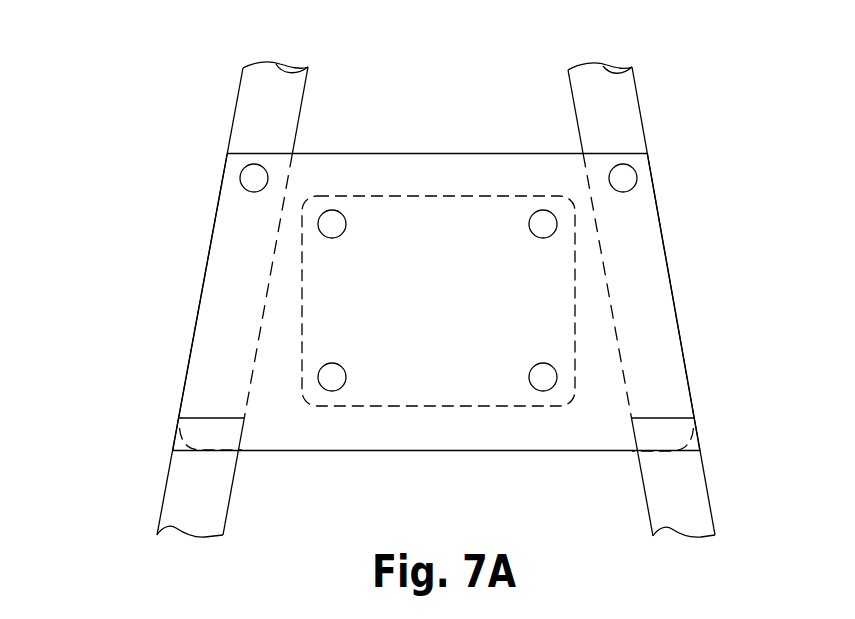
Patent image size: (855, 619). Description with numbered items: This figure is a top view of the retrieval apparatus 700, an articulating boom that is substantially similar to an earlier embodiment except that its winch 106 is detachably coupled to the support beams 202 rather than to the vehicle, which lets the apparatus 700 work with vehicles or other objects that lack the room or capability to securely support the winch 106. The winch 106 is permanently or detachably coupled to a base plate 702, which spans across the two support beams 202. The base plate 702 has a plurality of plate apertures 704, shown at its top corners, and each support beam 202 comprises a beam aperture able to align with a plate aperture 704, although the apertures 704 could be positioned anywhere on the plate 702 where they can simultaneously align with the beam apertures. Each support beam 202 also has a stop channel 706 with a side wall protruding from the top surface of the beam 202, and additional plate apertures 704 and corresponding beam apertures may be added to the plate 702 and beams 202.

The retrieval apparatus 700 is at (90, 40).
The support beams 202 is at (573, 100).
The base plate 702 is at (668, 322).
The plate apertures 704 is at (243, 166).
The stop channel 706 is at (180, 452).
The winch 106 is at (454, 310).